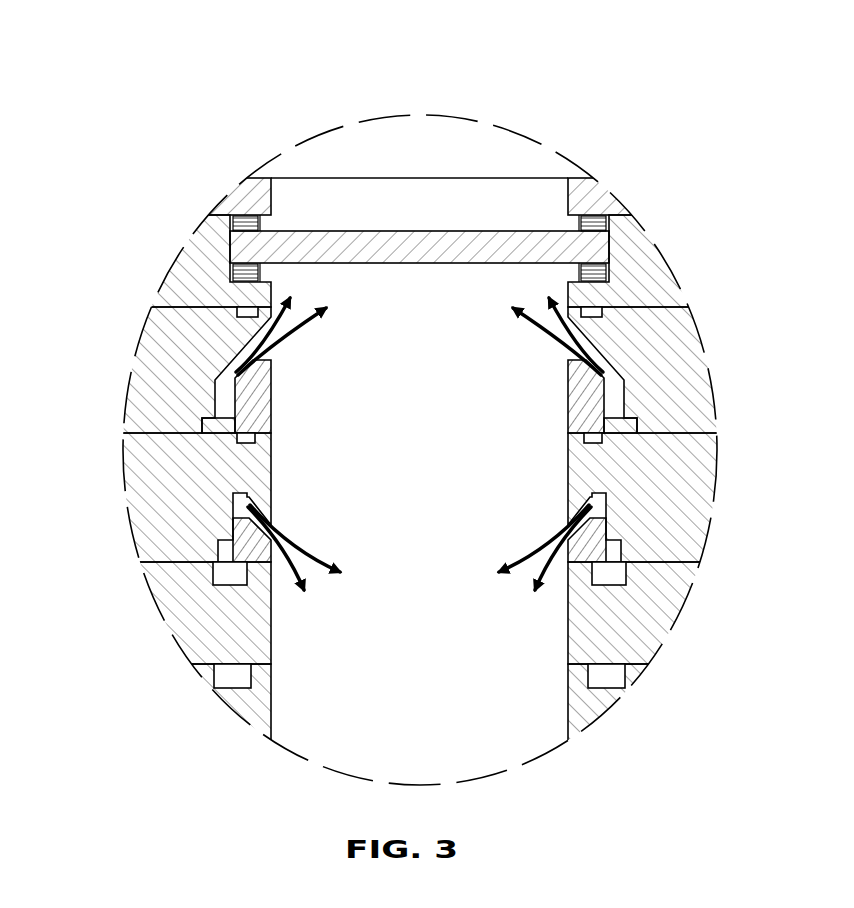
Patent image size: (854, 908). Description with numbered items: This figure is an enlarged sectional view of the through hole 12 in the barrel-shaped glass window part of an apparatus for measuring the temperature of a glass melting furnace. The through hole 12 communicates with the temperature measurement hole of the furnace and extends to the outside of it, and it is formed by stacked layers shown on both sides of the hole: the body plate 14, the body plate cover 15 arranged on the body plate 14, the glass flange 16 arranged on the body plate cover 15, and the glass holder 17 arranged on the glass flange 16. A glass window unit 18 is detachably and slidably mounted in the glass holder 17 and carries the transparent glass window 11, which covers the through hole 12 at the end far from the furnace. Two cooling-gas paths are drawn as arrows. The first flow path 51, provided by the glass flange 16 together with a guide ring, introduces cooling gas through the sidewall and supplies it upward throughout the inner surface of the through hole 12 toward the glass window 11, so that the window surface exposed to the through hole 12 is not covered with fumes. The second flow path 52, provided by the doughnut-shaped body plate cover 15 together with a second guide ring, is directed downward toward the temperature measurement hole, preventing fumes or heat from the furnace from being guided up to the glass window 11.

The glass window 11 is at (432, 231).
The through hole 12 is at (443, 712).
The body plate 14 is at (218, 635).
The body plate cover 15 is at (163, 498).
The glass flange 16 is at (170, 377).
The glass holder 17 is at (597, 197).
The glass window unit 18 is at (195, 271).
The first flow path 51 is at (573, 342).
The second flow path 52 is at (573, 529).